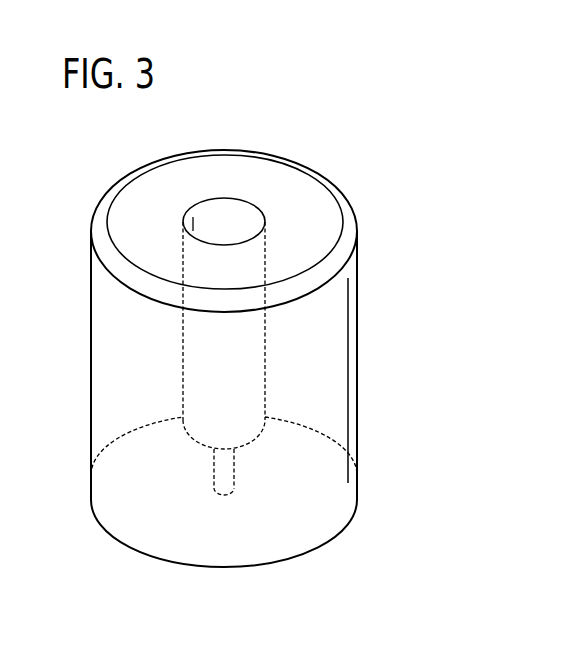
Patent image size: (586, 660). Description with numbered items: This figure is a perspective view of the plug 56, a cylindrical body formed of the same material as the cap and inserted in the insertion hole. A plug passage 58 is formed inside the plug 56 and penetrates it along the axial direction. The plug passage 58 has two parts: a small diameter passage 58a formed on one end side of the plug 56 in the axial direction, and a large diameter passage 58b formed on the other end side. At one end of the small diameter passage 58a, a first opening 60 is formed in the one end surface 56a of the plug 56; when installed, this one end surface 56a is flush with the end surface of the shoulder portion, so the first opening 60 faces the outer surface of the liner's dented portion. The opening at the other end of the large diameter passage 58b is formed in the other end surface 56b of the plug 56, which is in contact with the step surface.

The plug 56 is at (456, 129).
The one end surface 56a is at (275, 545).
The other end surface 56b is at (325, 218).
The plug passage 58 is at (285, 336).
The small diameter passage 58a is at (237, 472).
The large diameter passage 58b is at (265, 362).
The first opening 60 is at (224, 495).